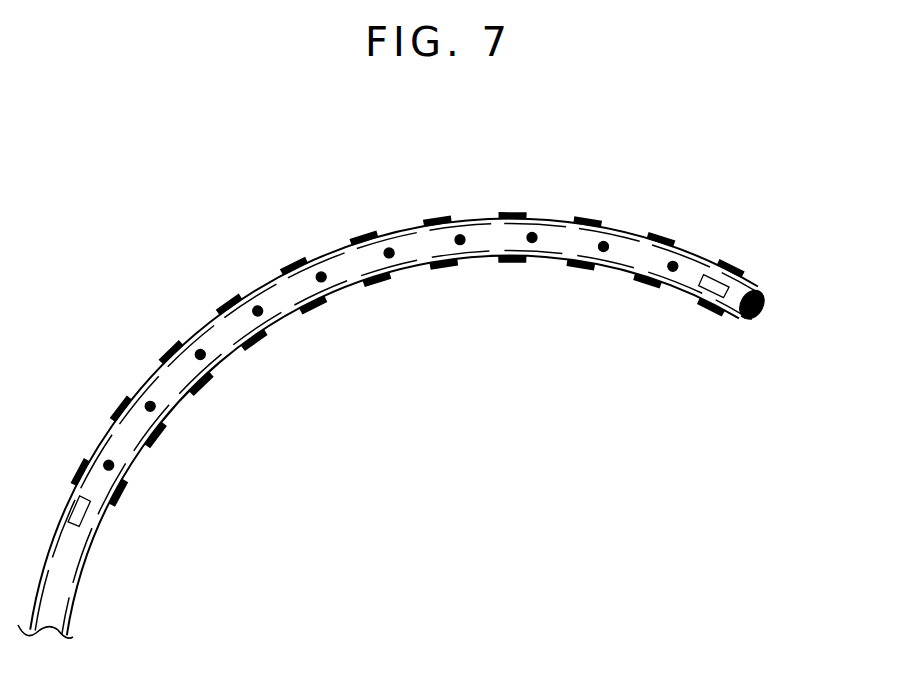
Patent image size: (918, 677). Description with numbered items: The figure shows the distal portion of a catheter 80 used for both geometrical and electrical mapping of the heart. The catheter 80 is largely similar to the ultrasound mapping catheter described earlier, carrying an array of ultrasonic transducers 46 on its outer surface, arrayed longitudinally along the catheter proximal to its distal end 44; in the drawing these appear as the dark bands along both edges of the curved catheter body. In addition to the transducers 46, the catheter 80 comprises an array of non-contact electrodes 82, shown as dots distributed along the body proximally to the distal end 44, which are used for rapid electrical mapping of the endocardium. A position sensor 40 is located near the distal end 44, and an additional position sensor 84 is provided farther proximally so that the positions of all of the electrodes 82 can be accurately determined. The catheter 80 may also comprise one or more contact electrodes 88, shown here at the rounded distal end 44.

The catheter 80 is at (276, 287).
The ultrasonic transducers 46 is at (257, 337).
The non-contact electrodes 82 is at (149, 410).
The additional position sensor 84 is at (82, 516).
The position sensor 40 is at (713, 289).
The distal end 44 is at (764, 311).
The contact electrodes 88 is at (752, 319).